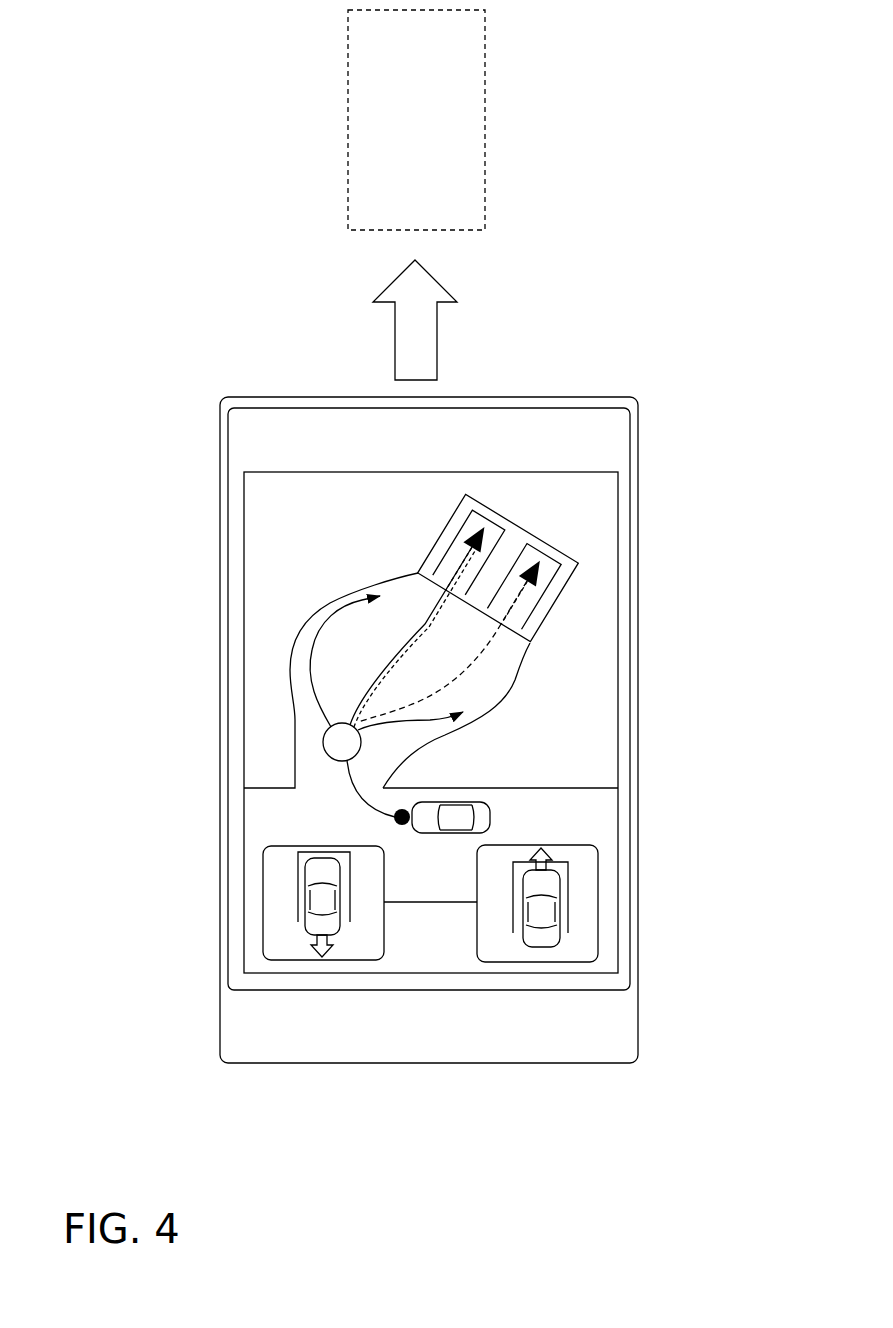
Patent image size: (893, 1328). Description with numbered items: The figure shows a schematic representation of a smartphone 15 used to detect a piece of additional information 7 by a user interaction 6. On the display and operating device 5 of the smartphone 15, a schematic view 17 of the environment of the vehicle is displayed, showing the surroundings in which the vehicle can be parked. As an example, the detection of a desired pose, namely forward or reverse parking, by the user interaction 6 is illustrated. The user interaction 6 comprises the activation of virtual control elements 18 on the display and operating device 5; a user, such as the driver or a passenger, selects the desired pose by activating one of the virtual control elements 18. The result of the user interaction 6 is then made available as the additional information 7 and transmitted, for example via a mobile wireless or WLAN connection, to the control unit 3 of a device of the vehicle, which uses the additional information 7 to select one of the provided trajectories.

The control unit 3 is at (458, 103).
The additional information 7 is at (416, 335).
The smartphone 15 is at (222, 392).
The display and operating device 5 is at (415, 782).
The schematic view 17 is at (415, 782).
The virtual control elements 18 is at (279, 924).
The user interaction 6 is at (488, 945).